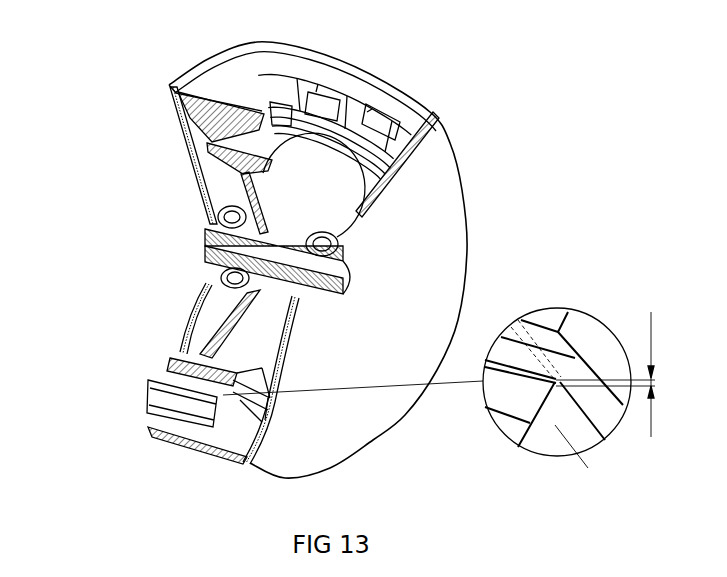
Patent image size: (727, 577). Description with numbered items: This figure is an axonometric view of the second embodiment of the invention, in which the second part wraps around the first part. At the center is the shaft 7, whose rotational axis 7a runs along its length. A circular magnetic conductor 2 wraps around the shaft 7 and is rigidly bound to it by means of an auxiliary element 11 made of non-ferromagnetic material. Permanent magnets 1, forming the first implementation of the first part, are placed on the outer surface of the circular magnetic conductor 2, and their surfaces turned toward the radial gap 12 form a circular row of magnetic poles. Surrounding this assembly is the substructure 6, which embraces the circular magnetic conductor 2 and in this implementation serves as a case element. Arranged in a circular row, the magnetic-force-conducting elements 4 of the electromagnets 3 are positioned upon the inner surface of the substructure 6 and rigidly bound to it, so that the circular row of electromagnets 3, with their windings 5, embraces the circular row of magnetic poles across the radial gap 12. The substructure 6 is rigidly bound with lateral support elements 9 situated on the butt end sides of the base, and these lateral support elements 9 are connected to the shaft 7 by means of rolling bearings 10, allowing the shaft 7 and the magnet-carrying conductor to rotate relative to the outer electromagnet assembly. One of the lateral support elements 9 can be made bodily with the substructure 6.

The permanent magnets 1 is at (372, 160).
The circular magnetic conductor 2 is at (288, 155).
The electromagnets 3 is at (132, 382).
The magnetic-force-conducting elements of electromagnets 4 is at (368, 88).
The windings of electromagnets 5 is at (357, 103).
The substructure 6 is at (188, 82).
The shaft 7 is at (207, 252).
The rotational axis 7a is at (208, 232).
The lateral support elements 9 is at (188, 305).
The bearings 10 is at (212, 222).
The auxiliary element 11 is at (275, 195).
The radial gap 12 is at (652, 312).